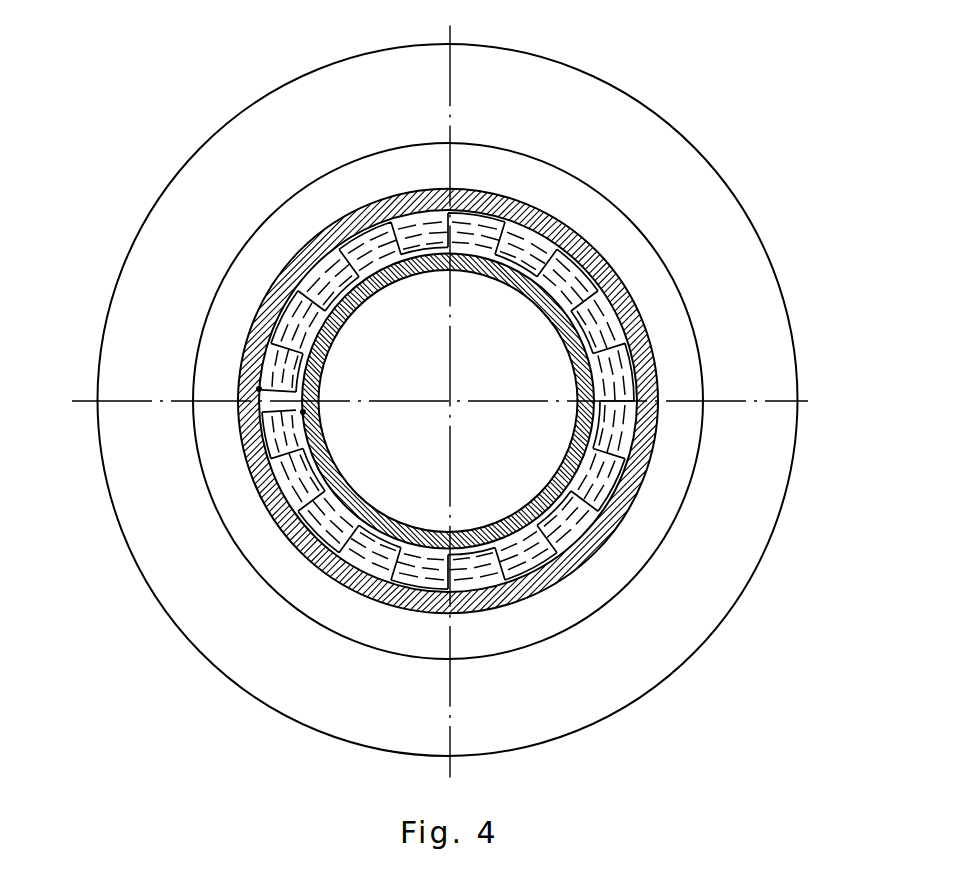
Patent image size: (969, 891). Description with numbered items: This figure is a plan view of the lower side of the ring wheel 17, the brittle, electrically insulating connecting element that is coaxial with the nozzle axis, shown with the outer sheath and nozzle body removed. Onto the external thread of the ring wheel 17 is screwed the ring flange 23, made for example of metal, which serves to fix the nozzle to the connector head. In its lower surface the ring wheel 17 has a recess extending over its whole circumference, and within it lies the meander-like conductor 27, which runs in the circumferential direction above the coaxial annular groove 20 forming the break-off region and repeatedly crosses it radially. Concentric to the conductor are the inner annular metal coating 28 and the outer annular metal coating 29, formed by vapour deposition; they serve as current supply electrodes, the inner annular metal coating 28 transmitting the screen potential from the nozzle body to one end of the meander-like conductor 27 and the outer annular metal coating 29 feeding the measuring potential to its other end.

The ring wheel 17 is at (662, 475).
The coaxial annular groove 20 is at (546, 299).
The ring flange 23 is at (515, 705).
The meander-like conductor 27 is at (550, 361).
The inner annular metal coating 28 is at (324, 495).
The outer annular metal coating 29 is at (357, 318).